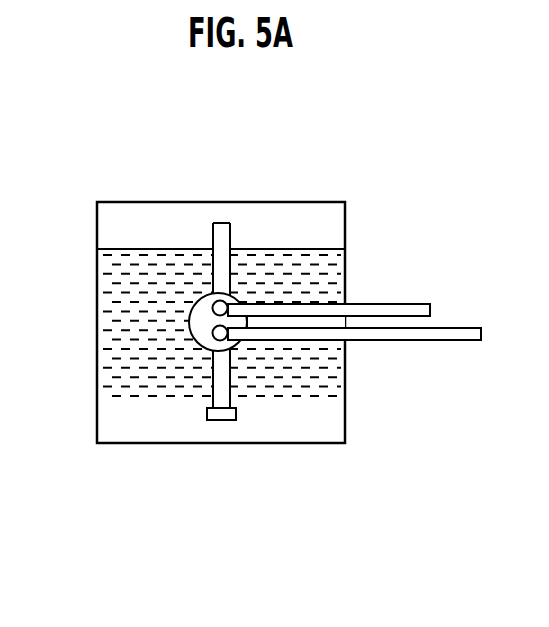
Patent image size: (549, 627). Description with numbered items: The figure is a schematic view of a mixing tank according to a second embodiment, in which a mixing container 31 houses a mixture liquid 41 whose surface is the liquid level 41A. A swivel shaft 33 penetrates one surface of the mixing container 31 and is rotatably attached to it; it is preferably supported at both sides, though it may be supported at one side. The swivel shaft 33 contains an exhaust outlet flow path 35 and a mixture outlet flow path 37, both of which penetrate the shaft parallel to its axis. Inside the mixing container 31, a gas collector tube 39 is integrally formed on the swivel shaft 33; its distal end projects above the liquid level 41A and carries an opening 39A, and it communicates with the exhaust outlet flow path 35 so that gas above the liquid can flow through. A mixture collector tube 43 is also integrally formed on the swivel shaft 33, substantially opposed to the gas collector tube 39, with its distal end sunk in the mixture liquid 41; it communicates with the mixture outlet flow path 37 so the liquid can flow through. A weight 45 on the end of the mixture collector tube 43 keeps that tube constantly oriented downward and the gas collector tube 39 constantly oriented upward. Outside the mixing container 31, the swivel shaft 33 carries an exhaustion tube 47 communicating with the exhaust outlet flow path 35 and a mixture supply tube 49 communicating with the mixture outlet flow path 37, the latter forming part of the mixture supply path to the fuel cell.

The mixing container 31 is at (294, 201).
The swivel shaft 33 is at (200, 320).
The exhaust outlet flow path 35 is at (213, 303).
The mixture outlet flow path 37 is at (213, 336).
The gas collector tube 39 is at (212, 237).
The opening 39A is at (220, 222).
The mixture liquid 41 is at (337, 263).
The liquid level 41A is at (305, 248).
The mixture collector tube 43 is at (210, 387).
The weight 45 is at (237, 413).
The exhaustion tube 47 is at (412, 303).
The mixture supply tube 49 is at (416, 340).